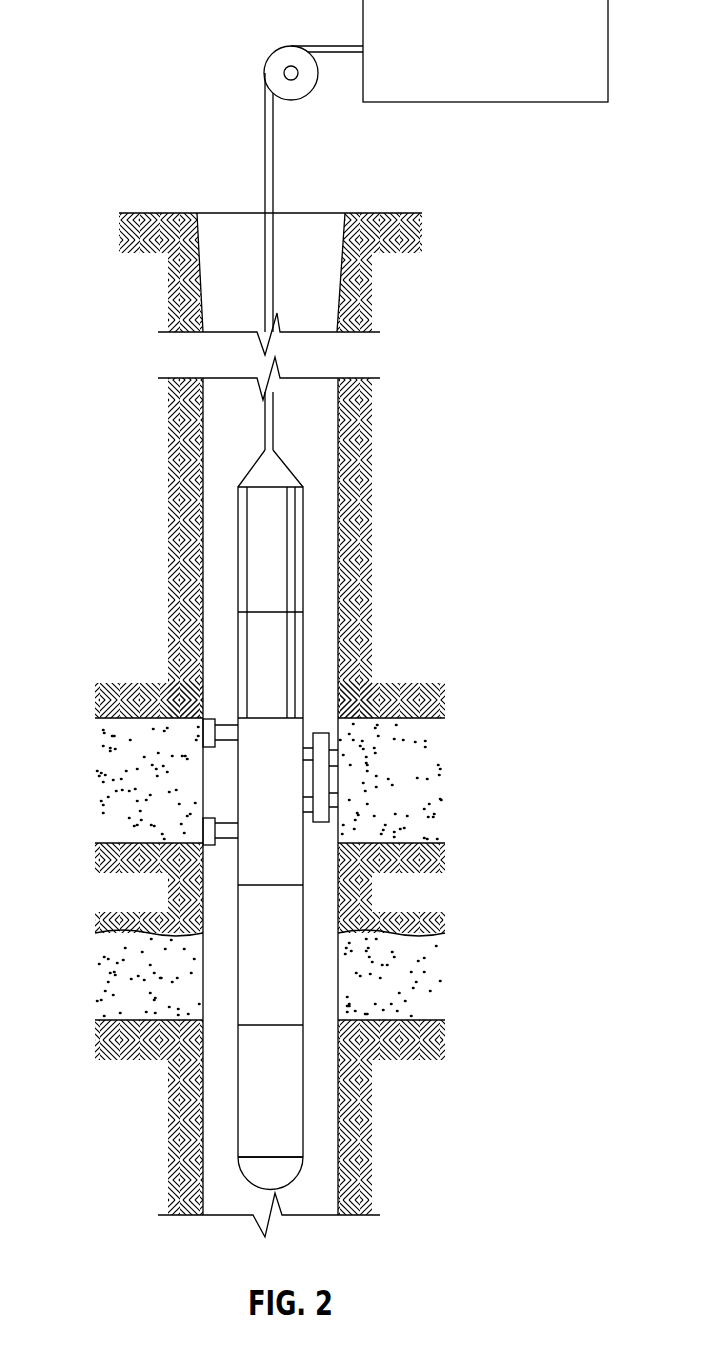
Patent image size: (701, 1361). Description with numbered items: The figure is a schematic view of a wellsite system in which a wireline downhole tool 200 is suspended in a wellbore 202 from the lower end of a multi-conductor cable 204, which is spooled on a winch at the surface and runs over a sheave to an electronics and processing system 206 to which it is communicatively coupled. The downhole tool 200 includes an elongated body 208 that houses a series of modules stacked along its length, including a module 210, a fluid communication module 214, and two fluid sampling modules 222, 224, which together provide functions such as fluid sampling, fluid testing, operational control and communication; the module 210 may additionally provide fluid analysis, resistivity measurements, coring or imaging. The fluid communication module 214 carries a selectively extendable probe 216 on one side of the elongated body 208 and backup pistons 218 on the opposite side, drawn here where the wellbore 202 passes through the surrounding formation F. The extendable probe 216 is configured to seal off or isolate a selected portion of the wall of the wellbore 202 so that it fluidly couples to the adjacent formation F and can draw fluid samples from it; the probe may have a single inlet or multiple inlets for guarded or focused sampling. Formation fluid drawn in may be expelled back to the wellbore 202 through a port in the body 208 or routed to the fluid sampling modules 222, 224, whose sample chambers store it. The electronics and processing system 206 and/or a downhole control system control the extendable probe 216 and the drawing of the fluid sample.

The wireline downhole tool 200 is at (313, 612).
The wellbore 202 is at (340, 411).
The multi-conductor cable 204 is at (263, 228).
The electronics and processing system 206 is at (537, 102).
The elongated body 208 is at (293, 569).
The module 210 is at (293, 678).
The fluid communication module 214 is at (293, 812).
The extendable probe 216 is at (328, 777).
The backup pistons 218 is at (203, 833).
The fluid sampling module 222 is at (290, 957).
The fluid sampling module 224 is at (290, 1100).
The formation F is at (441, 799).